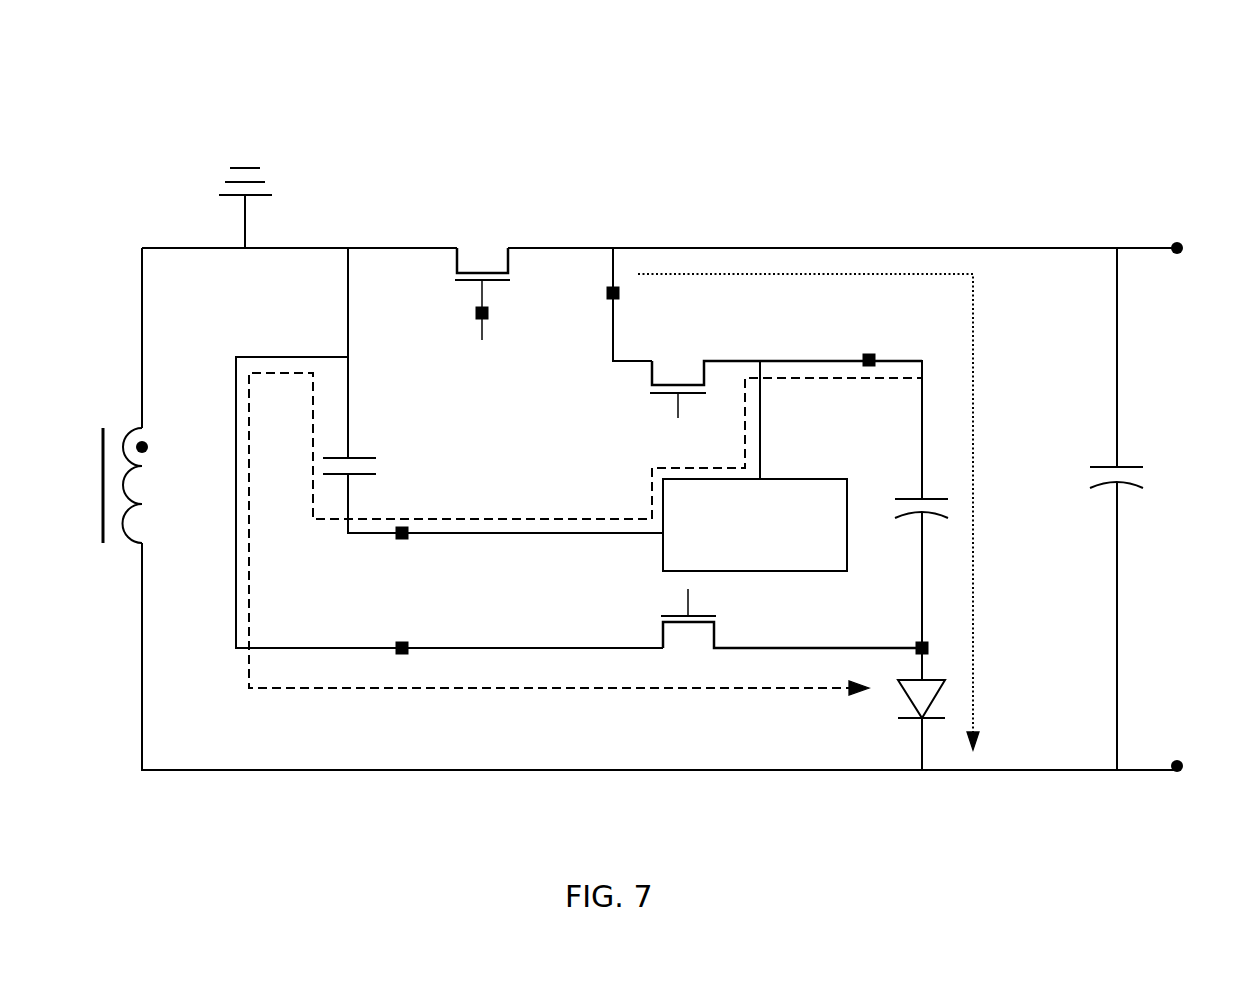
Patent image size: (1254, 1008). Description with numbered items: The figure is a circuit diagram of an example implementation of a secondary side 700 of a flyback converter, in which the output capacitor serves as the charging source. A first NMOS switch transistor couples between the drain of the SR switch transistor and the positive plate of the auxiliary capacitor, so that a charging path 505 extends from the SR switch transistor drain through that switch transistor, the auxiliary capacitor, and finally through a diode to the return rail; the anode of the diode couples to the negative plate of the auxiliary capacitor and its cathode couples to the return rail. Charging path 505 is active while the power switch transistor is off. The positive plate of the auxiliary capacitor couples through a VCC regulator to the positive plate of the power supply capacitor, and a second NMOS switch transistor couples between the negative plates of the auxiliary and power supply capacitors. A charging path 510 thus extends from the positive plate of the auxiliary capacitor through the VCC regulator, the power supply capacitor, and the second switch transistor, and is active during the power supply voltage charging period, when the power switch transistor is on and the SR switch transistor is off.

The secondary side 700 is at (339, 108).
The charging path 505 is at (973, 415).
The charging path 510 is at (404, 690).